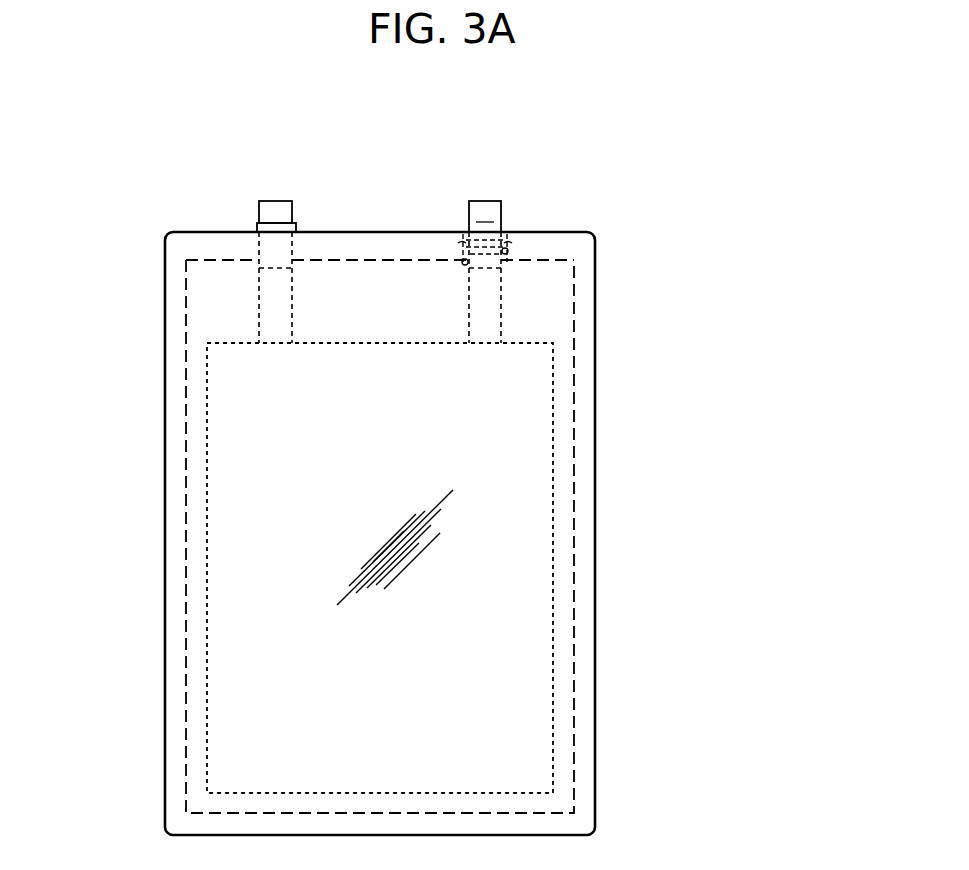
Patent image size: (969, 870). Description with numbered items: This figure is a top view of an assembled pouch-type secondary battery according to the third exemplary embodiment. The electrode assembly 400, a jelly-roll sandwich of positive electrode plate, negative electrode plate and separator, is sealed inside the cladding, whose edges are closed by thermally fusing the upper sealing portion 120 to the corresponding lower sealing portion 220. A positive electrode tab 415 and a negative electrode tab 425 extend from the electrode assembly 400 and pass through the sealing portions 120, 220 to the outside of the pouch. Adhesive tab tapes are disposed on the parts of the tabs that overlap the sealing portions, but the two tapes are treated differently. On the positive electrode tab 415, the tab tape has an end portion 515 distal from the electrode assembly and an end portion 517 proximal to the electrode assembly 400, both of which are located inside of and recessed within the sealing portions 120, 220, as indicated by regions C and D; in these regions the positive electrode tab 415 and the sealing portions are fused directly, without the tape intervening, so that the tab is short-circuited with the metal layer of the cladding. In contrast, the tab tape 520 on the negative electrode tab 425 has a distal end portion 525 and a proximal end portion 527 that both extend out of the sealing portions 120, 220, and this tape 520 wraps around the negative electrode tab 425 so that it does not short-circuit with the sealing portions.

The upper sealing portion 120 is at (585, 600).
The lower sealing portion 220 is at (585, 418).
The electrode assembly 400 is at (553, 483).
The positive electrode tab 415 is at (488, 205).
The negative electrode tab 425 is at (270, 213).
The end portion distal from the electrode assembly 515 is at (483, 237).
The end portion distal of the electrode assembly 525 is at (283, 205).
The end portion proximal to the electrode assembly 517 is at (466, 277).
The end portion proximal to the electrode assembly 527 is at (275, 270).
The tab tape 520 is at (267, 247).
The region C is at (501, 213).
The region D is at (505, 278).